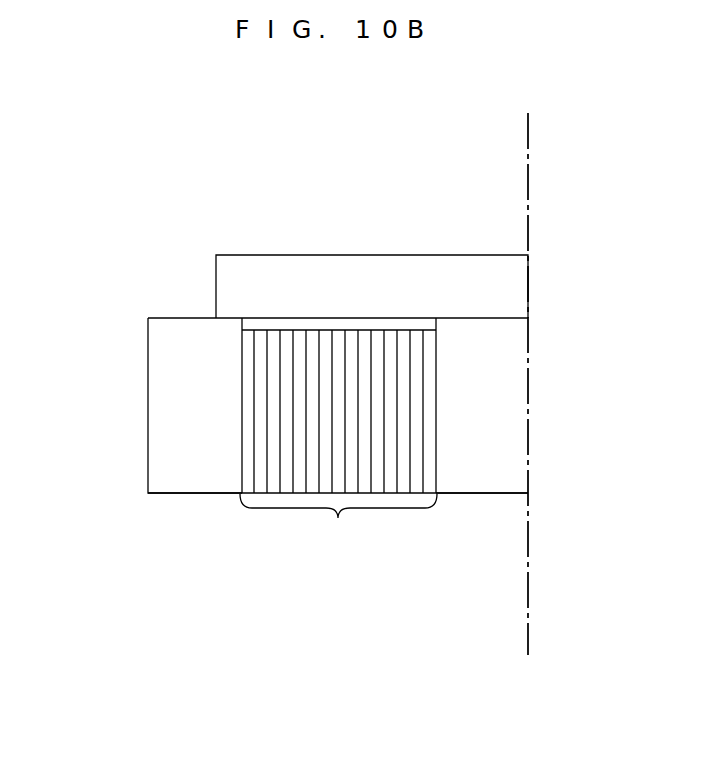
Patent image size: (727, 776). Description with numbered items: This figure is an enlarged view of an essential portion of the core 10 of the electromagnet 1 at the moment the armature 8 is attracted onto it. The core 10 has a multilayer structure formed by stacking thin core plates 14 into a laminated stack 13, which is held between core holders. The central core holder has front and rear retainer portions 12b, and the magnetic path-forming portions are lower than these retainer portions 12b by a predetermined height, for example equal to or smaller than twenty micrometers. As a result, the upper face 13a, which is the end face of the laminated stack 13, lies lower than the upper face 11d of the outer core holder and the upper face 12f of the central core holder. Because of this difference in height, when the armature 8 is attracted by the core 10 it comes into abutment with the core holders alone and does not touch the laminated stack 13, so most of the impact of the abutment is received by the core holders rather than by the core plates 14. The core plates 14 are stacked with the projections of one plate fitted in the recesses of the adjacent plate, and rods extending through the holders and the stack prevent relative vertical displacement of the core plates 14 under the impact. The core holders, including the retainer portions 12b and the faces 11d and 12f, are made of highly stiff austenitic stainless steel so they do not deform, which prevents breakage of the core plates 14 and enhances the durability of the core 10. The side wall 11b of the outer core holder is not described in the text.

The electromagnet 1 is at (112, 205).
The armature 8 is at (315, 275).
The core 10 is at (190, 505).
The side wall 11b is at (162, 451).
The upper face of the core holder 11d is at (183, 318).
The retainer portions 12b is at (497, 459).
The upper face of the central core holder 12f is at (488, 319).
The laminated stack 13 is at (335, 525).
The upper face of the laminated stack 13a is at (403, 329).
The core plates 14 is at (288, 342).